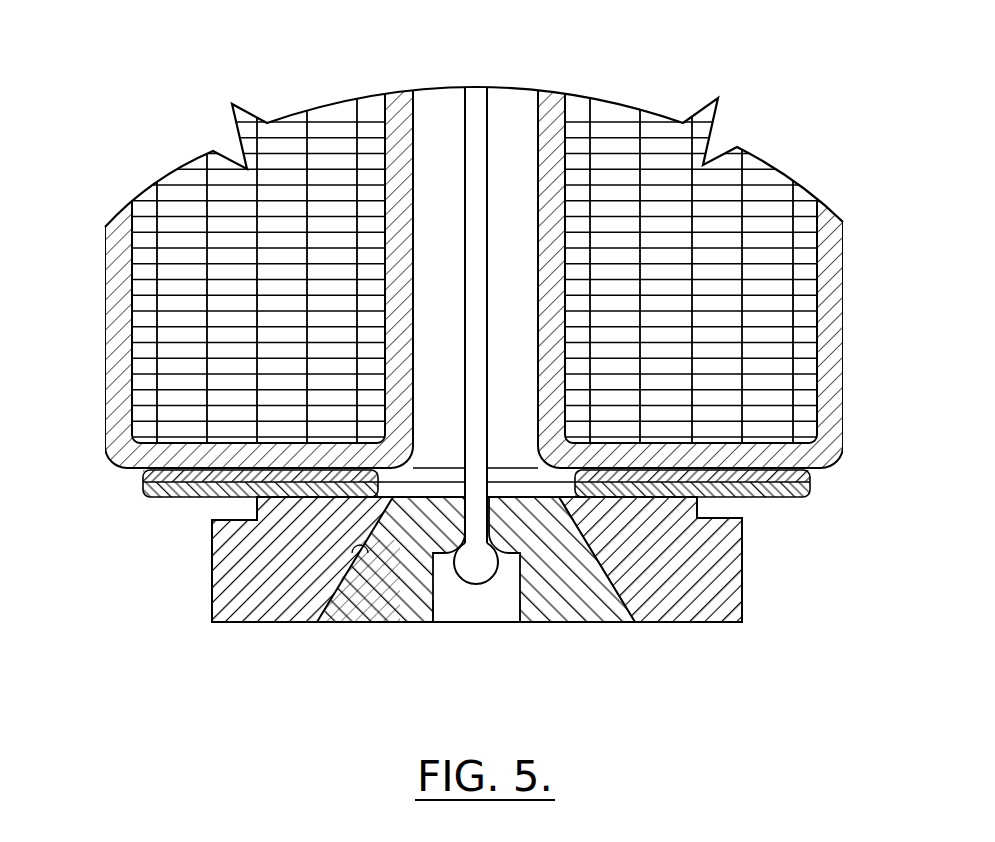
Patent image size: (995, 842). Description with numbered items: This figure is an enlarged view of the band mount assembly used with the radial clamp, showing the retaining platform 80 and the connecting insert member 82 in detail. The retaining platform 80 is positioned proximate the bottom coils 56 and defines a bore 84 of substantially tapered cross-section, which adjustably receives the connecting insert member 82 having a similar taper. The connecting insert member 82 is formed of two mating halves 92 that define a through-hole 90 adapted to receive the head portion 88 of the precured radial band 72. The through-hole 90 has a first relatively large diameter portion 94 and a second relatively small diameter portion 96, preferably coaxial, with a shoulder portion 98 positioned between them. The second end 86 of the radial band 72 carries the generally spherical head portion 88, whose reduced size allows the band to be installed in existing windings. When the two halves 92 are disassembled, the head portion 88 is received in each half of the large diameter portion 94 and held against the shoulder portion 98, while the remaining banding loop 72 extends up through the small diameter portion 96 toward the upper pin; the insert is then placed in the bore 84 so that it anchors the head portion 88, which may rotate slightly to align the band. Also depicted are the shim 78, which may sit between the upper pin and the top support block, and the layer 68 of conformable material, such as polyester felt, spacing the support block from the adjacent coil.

The bottom coils 56 is at (222, 378).
The radial band 72 is at (478, 147).
The second end 86 is at (484, 443).
The head portion 88 is at (620, 446).
The shim 78 is at (143, 478).
The layer of conformable material 68 is at (143, 488).
The retaining platform 80 is at (690, 583).
The bore 84 is at (346, 576).
The shoulder portion 98 is at (340, 612).
The first relatively large diameter portion 94 is at (457, 598).
The through-hole 90 is at (470, 610).
The second relatively small diameter portion 96 is at (525, 593).
The mating halves 92 is at (588, 622).
The connecting insert member 82 is at (608, 603).